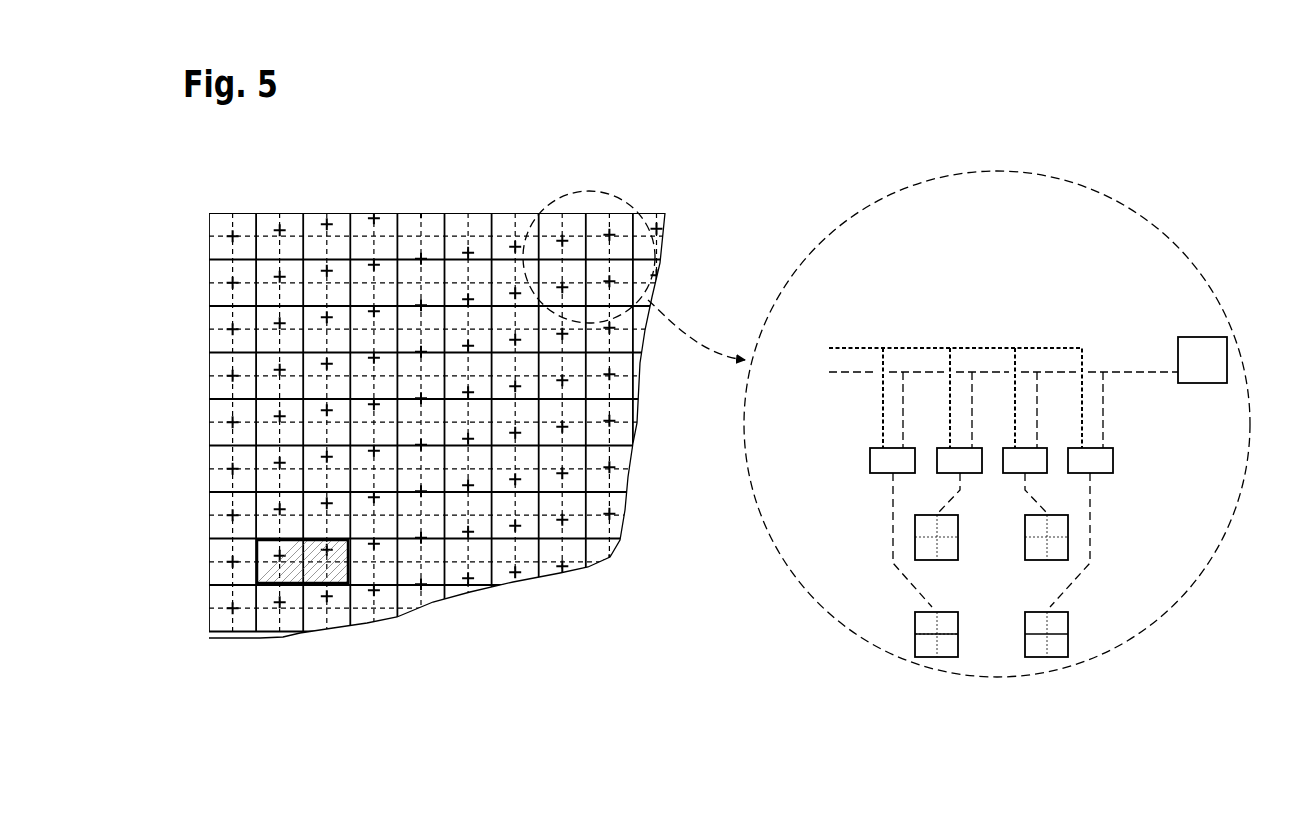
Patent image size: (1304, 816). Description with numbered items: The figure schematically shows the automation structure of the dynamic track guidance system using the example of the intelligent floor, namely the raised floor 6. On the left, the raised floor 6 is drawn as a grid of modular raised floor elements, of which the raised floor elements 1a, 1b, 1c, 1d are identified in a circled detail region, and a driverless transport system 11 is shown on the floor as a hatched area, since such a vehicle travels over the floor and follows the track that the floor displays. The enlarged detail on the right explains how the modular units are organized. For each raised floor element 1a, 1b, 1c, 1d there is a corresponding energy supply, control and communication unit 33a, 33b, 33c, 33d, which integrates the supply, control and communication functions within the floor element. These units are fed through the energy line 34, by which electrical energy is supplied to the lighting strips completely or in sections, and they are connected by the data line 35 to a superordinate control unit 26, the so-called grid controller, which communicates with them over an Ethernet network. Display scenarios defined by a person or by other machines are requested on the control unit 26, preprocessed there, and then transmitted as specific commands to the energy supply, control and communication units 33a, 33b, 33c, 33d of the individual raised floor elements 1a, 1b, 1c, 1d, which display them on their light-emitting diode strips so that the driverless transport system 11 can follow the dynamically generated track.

The raised floor 6 is at (342, 188).
The raised floor element 1a is at (552, 225).
The raised floor element 1b is at (615, 220).
The raised floor element 1c is at (617, 293).
The raised floor element 1d is at (572, 293).
The driverless transport system 11 is at (317, 576).
The energy line 34 is at (862, 346).
The data line 35 is at (840, 373).
The energy supply, control and communication unit 33a is at (870, 462).
The energy supply, control and communication unit 33b is at (950, 473).
The energy supply, control and communication unit 33c is at (1033, 473).
The energy supply, control and communication unit 33d is at (1114, 458).
The control unit 26 is at (1200, 337).